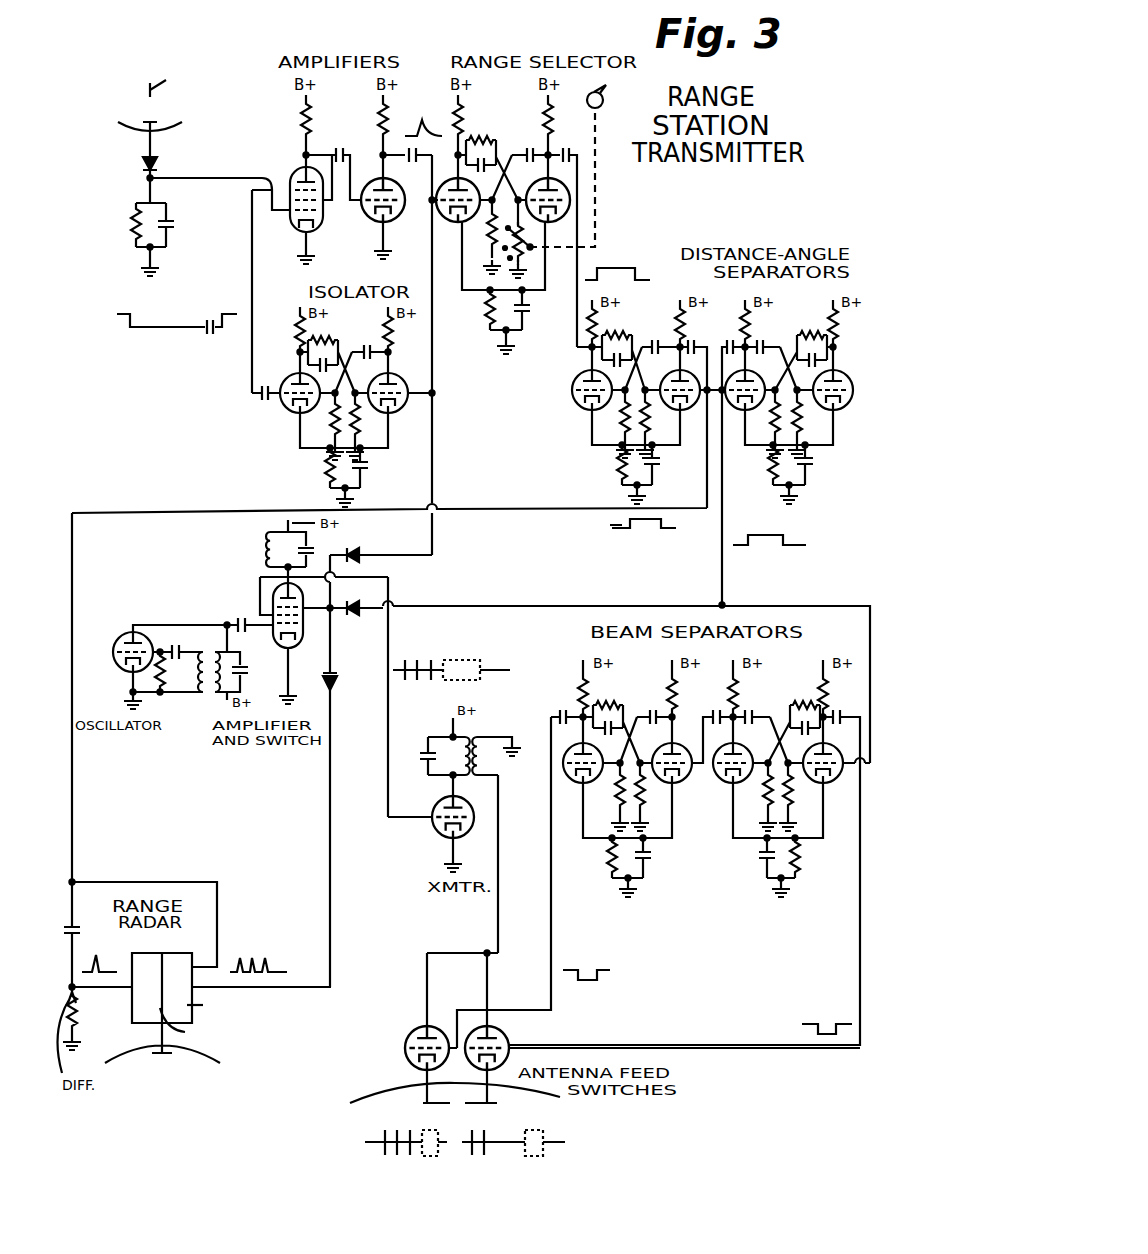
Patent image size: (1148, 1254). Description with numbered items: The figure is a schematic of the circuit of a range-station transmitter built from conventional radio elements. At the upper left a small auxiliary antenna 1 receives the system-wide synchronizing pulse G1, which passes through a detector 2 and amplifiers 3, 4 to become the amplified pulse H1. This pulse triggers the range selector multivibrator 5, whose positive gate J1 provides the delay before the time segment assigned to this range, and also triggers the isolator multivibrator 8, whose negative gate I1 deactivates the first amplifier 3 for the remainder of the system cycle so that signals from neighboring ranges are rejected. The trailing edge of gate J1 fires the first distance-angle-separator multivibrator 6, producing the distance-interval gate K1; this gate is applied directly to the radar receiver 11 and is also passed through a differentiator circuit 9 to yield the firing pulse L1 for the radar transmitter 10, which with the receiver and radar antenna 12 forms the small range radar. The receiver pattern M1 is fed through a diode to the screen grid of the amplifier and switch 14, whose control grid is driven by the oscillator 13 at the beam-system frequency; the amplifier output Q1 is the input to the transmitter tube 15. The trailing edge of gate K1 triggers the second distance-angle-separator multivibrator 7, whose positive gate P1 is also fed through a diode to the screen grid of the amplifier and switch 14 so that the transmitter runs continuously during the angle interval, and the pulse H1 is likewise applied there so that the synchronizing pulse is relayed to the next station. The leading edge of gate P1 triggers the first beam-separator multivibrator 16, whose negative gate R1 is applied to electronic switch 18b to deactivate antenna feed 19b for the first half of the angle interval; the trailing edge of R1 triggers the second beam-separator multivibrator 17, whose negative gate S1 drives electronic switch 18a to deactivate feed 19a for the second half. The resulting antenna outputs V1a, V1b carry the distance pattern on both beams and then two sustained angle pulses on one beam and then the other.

The auxiliary antenna 1 is at (118, 114).
The detector 2 is at (115, 250).
The first amplifier 3 is at (288, 263).
The second amplifier 4 is at (416, 253).
The range selector multivibrator 5 is at (482, 350).
The first distance-angle-separator multivibrator 6 is at (608, 477).
The second distance-angle-separator multivibrator 7 is at (849, 475).
The isolator multivibrator 8 is at (314, 475).
The differentiator circuit 9 is at (110, 1026).
The radar transmitter 10 is at (152, 990).
The radar receiver 11 is at (185, 990).
The radar antenna 12 is at (170, 1055).
The oscillator 13 is at (193, 716).
The amplifier and switch 14 is at (253, 583).
The transmitter tube 15 is at (422, 803).
The first beam-separator multivibrator 16 is at (834, 873).
The second beam-separator multivibrator 17 is at (682, 883).
The second electronic switch 18a is at (413, 1036).
The electronic switch 18b is at (557, 1041).
The antenna feed 19a is at (418, 1095).
The antenna feed 19b is at (487, 1095).
The system-wide synchronizing pulse G1 is at (166, 80).
The synchronizing pulse output H1 is at (430, 112).
The negative gate I1 is at (197, 328).
The positive gate J1 is at (608, 258).
The distance-interval gate K1 is at (626, 528).
The angle-interval gate P1 is at (760, 520).
The amplifier output Q1 is at (431, 664).
The beam-separator gate R1 is at (825, 1022).
The beam-separator gate S1 is at (587, 969).
The firing pulse L1 is at (100, 965).
The radar receiver pattern M1 is at (272, 955).
The antenna output V1a is at (418, 1160).
The antenna output V1b is at (500, 1160).